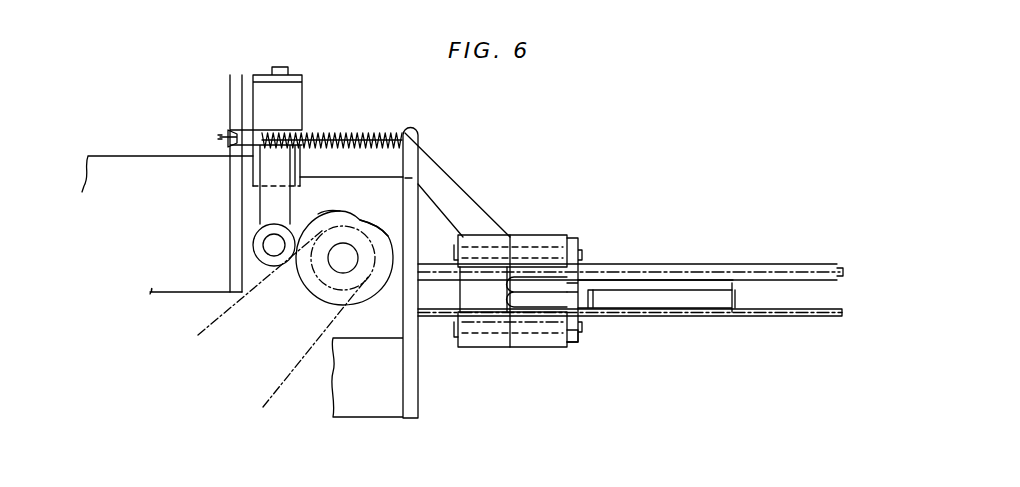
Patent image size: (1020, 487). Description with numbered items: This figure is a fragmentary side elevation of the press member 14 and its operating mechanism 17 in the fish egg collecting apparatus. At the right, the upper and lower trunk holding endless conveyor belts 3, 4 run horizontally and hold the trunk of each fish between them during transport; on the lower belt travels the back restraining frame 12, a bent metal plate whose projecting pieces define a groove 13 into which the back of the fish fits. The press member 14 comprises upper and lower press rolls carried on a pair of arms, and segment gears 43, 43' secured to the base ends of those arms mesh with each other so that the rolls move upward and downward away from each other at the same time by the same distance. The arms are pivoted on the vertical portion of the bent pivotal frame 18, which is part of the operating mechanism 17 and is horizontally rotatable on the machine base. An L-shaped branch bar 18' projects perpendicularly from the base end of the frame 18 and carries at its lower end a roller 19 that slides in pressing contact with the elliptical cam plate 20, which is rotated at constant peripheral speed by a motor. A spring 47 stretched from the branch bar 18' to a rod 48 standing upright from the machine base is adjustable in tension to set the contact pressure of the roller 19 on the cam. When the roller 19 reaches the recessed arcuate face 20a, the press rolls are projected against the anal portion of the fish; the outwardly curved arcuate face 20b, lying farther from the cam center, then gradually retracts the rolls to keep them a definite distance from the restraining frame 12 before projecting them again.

The upper trunk holding endless conveyor belt 3 is at (722, 264).
The lower trunk holding endless conveyor belt 4 is at (733, 318).
The back restraining frame 12 is at (642, 305).
The groove 13 is at (687, 292).
The press member 14 is at (527, 232).
The operating mechanism 17 is at (223, 117).
The pivotal frame 18 is at (457, 185).
The L-shaped branch bar 18' is at (296, 179).
The roller 19 is at (253, 245).
The cam plate 20 is at (315, 282).
The recessed arcuate face 20a is at (355, 213).
The outwardly curved arcuate face 20b is at (313, 213).
The segment gear 43 is at (587, 266).
The segment gear 43' is at (588, 361).
The spring 47 is at (355, 133).
The rod 48 is at (408, 383).